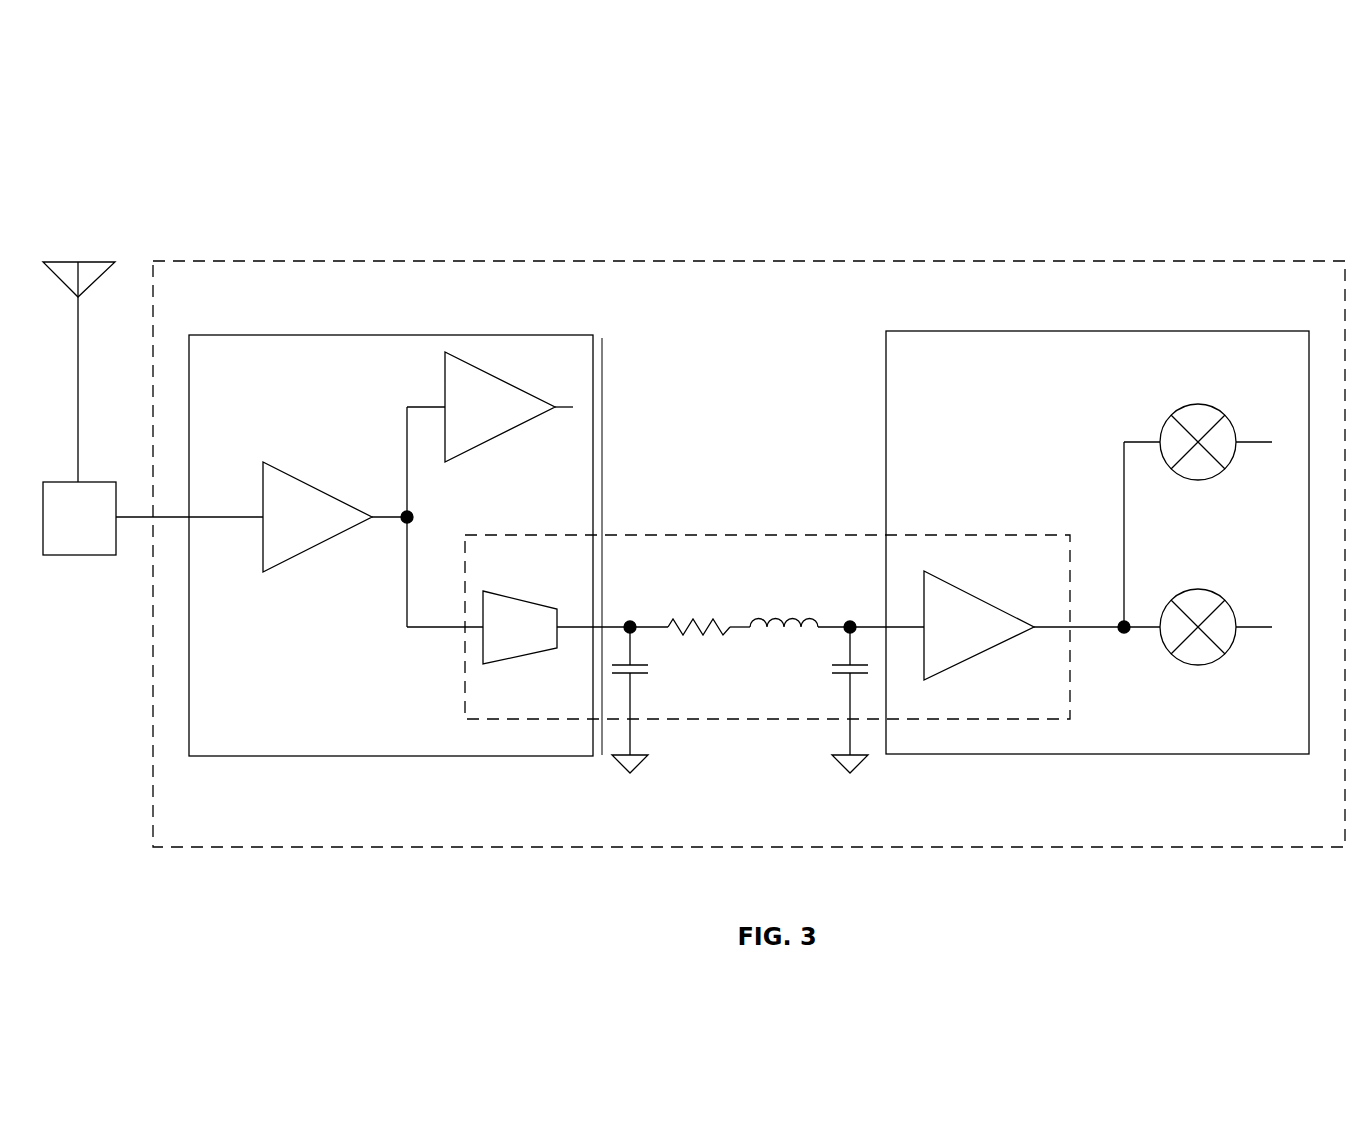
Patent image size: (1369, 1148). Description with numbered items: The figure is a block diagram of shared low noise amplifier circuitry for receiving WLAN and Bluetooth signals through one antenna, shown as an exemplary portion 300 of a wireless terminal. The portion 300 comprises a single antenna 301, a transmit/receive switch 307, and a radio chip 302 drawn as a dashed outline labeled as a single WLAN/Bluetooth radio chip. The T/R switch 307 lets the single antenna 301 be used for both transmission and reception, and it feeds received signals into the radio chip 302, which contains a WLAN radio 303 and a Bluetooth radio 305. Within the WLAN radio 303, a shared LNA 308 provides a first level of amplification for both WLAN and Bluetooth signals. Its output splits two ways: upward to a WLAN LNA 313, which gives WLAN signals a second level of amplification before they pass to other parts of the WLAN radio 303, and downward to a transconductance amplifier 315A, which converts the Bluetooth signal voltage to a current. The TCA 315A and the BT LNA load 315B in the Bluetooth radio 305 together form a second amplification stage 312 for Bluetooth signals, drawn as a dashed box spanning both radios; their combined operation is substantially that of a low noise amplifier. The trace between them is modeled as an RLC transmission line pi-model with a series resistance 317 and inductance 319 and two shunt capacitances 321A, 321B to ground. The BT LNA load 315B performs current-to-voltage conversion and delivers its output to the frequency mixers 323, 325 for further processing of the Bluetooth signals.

The portion of the wireless terminal 300 is at (1130, 110).
The single antenna 301 is at (102, 262).
The radio chip 302 is at (762, 261).
The WLAN radio 303 is at (398, 334).
The Bluetooth radio 305 is at (1130, 331).
The transmit/receive (T/R) switch 307 is at (72, 556).
The shared LNA 308 is at (338, 534).
The second amplification stage 312 is at (765, 533).
The WLAN LNA 313 is at (490, 440).
The transconductance amplifier (TCA) 315A is at (512, 598).
The BT LNA load 315B is at (982, 600).
The resistance (R) 317 is at (690, 620).
The inductance (L) 319 is at (778, 618).
The capacitance (C1) 321A is at (646, 674).
The capacitance (C2) 321B is at (836, 674).
The frequency mixer 323 is at (1200, 405).
The frequency mixer 325 is at (1207, 590).